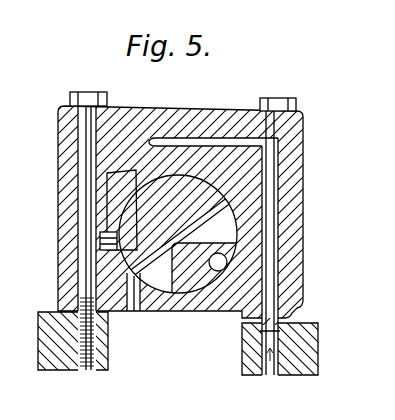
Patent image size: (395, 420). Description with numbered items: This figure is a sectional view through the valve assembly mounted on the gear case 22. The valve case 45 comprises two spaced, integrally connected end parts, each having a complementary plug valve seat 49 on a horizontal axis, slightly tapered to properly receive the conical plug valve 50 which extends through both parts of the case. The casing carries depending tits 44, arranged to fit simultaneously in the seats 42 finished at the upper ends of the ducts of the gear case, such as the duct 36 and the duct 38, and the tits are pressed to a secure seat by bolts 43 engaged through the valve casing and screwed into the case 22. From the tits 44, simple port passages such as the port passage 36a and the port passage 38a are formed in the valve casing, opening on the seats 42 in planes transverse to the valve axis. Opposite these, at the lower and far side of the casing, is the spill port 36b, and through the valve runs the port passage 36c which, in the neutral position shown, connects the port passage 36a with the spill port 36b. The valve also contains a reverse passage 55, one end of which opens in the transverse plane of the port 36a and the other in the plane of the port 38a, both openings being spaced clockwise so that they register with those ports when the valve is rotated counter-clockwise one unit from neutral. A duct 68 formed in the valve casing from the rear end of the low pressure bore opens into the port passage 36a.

The gear case 22 is at (44, 352).
The duct 36 is at (270, 374).
The port passage 36a is at (273, 260).
The spill port 36b is at (131, 306).
The port passage 36c is at (180, 231).
The duct 38 is at (68, 310).
The port passage 38a is at (100, 245).
The seat 42 is at (302, 172).
The bolt 43 is at (88, 87).
The tit 44 is at (300, 306).
The valve case 45 is at (197, 130).
The plug valve seat 49 is at (228, 212).
The conical plug valve 50 is at (150, 138).
The reverse passage 55 is at (107, 218).
The duct 68 is at (231, 138).